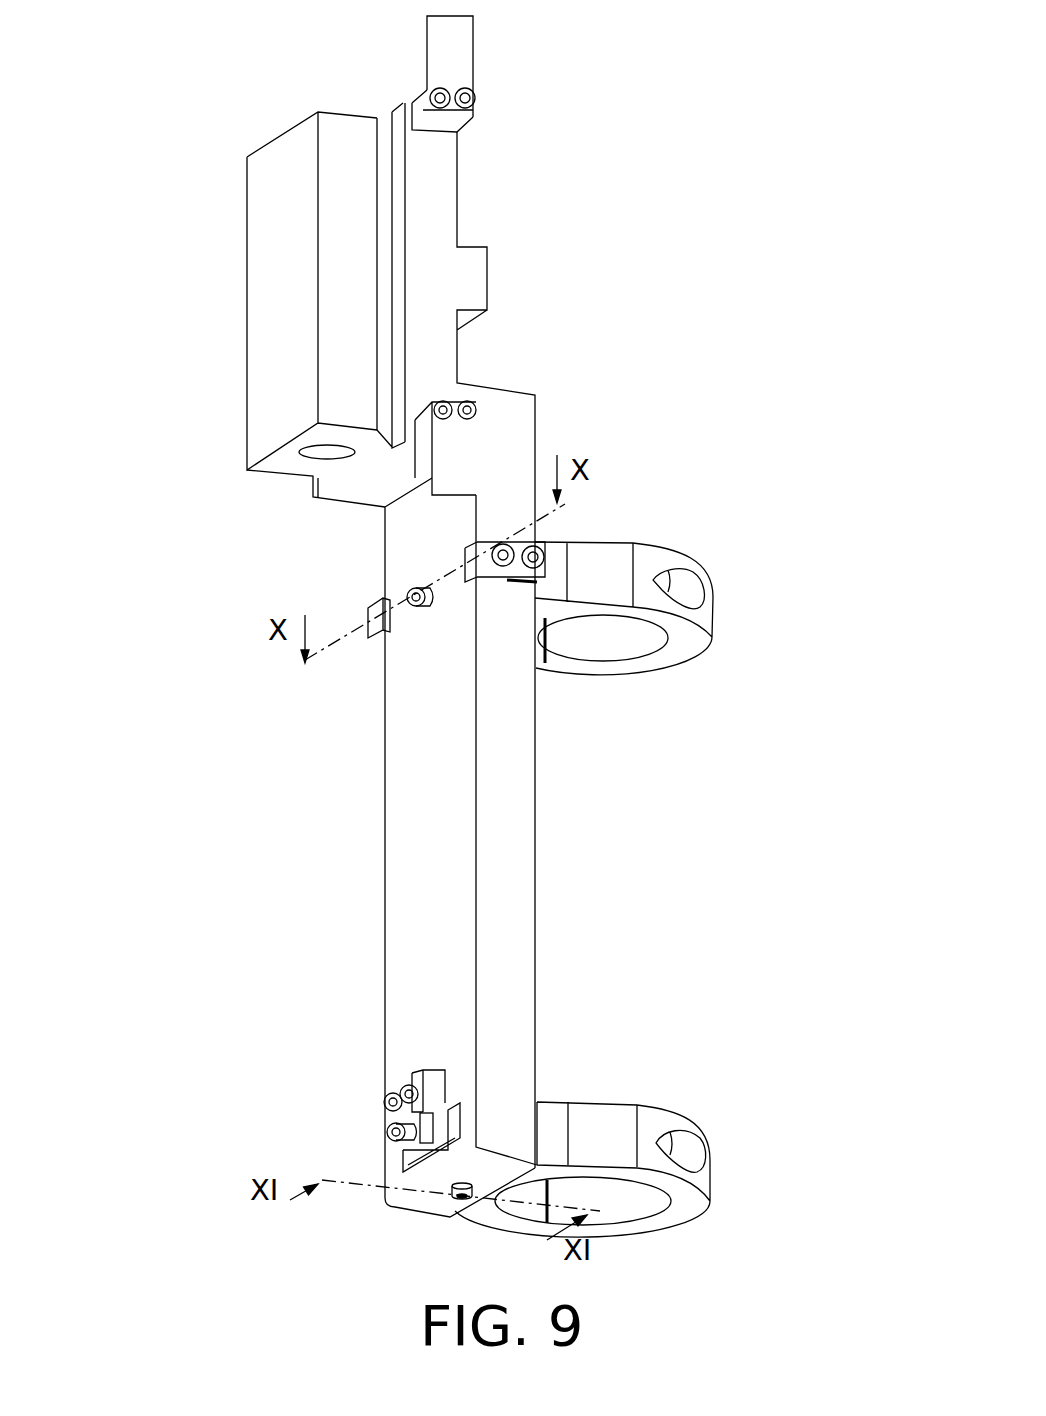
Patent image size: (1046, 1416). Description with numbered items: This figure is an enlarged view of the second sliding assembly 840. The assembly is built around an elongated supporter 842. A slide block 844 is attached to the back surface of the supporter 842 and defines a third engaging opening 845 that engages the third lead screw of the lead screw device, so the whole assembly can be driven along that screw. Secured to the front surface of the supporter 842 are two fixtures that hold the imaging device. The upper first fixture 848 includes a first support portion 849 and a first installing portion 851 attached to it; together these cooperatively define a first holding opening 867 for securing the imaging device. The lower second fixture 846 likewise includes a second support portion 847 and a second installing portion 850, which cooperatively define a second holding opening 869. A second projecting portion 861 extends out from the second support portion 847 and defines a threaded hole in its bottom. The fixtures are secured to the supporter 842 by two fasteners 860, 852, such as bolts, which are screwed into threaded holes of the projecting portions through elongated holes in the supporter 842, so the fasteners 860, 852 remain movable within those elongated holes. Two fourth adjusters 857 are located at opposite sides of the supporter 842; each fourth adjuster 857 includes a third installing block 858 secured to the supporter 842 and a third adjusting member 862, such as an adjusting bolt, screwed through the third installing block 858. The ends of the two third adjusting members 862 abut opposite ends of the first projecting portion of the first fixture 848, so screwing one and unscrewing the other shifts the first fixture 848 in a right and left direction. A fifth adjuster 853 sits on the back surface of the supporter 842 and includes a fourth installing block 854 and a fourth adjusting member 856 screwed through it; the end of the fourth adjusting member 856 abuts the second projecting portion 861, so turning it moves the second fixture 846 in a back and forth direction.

The second sliding assembly 840 is at (552, 290).
The supporter 842 is at (507, 445).
The slide block 844 is at (275, 275).
The third engaging opening 845 is at (322, 455).
The second fixture 846 is at (620, 1109).
The second support portion 847 is at (590, 1130).
The first fixture 848 is at (689, 605).
The first support portion 849 is at (553, 553).
The second installing portion 850 is at (663, 1120).
The first installing portion 851 is at (703, 615).
The fastener 852 is at (455, 1198).
The fifth adjuster 853 is at (430, 1045).
The fourth installing block 854 is at (425, 1075).
The fourth adjusting member 856 is at (349, 1113).
The fourth adjuster 857 is at (370, 654).
The third installing block 858 is at (483, 573).
The fastener 860 is at (408, 585).
The second projecting portion 861 is at (446, 1122).
The third adjusting member 862 is at (533, 567).
The first holding opening 867 is at (600, 642).
The second holding opening 869 is at (637, 1205).